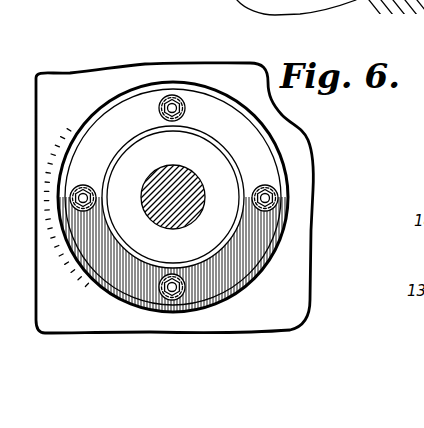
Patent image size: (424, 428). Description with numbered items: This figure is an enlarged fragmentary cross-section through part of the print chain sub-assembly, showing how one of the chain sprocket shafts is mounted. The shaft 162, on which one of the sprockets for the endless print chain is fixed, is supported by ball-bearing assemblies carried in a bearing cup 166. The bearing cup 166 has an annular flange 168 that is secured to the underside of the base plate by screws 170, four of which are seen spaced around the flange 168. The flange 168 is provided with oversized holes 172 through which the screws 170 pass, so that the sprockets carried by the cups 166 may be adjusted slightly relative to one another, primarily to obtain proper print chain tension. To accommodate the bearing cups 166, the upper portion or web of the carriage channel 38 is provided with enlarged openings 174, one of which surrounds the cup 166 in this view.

The carriage channel 38 is at (286, 280).
The shaft 162 is at (166, 176).
The bearing cup 166 is at (123, 160).
The annular flange 168 is at (210, 107).
The screw 170 is at (171, 104).
The oversized hole 172 is at (186, 96).
The enlarged opening 174 is at (119, 97).